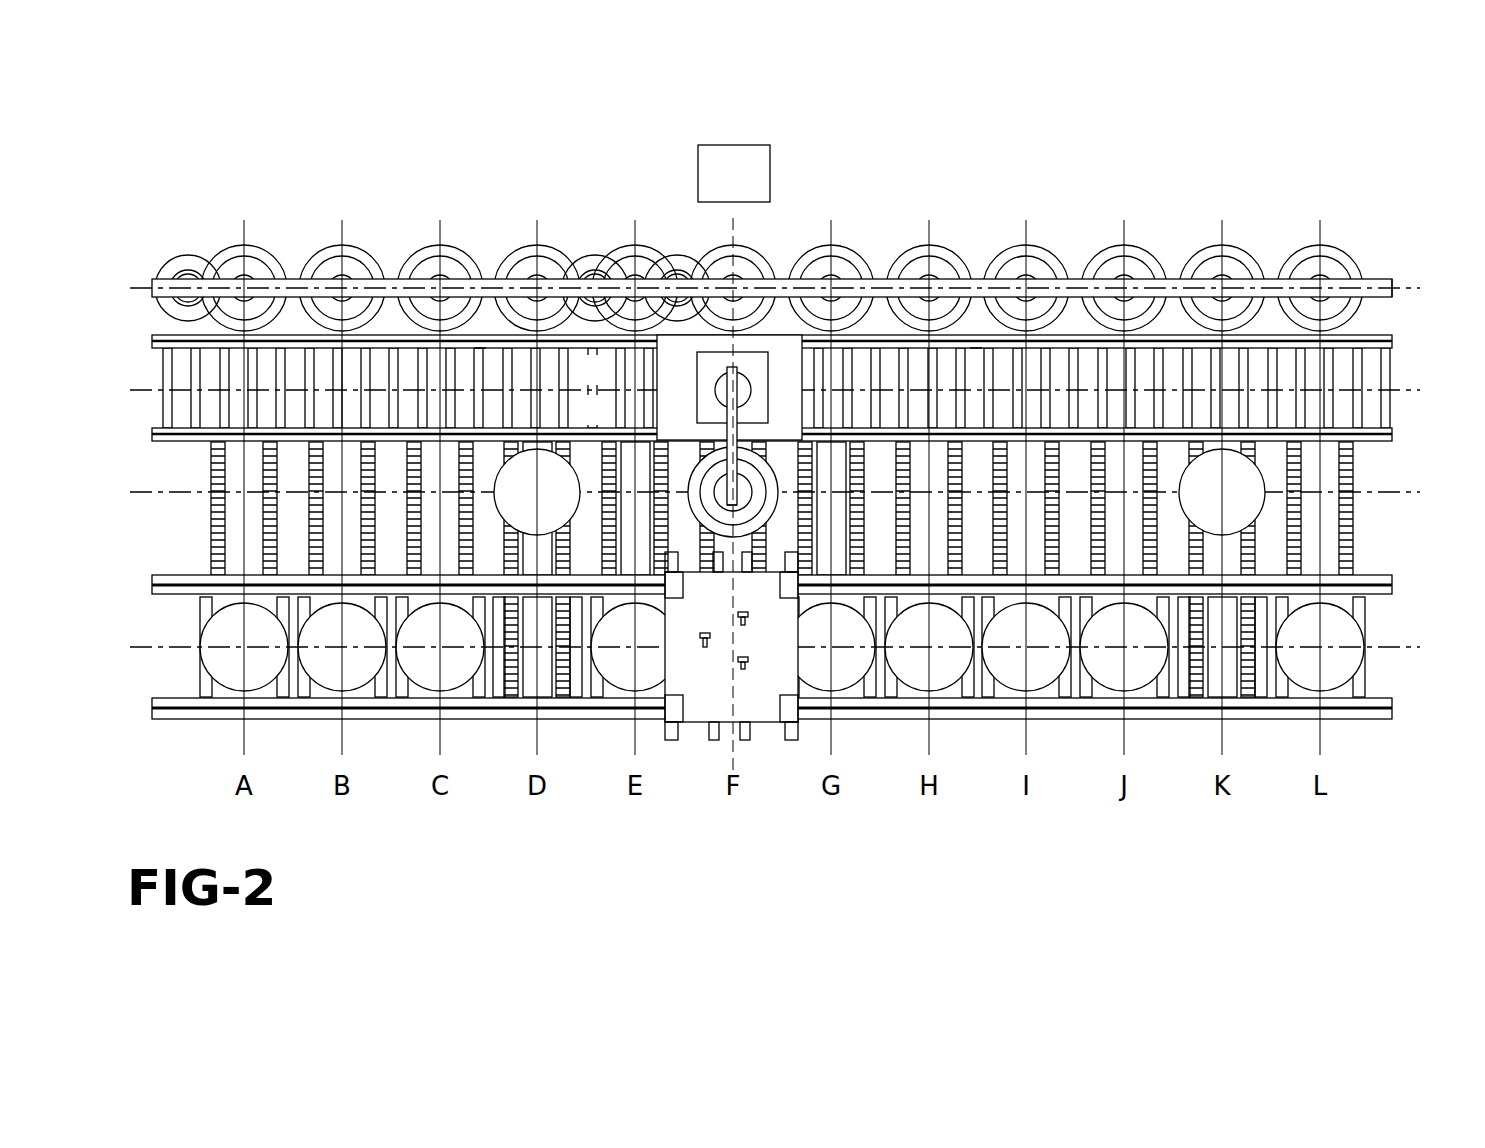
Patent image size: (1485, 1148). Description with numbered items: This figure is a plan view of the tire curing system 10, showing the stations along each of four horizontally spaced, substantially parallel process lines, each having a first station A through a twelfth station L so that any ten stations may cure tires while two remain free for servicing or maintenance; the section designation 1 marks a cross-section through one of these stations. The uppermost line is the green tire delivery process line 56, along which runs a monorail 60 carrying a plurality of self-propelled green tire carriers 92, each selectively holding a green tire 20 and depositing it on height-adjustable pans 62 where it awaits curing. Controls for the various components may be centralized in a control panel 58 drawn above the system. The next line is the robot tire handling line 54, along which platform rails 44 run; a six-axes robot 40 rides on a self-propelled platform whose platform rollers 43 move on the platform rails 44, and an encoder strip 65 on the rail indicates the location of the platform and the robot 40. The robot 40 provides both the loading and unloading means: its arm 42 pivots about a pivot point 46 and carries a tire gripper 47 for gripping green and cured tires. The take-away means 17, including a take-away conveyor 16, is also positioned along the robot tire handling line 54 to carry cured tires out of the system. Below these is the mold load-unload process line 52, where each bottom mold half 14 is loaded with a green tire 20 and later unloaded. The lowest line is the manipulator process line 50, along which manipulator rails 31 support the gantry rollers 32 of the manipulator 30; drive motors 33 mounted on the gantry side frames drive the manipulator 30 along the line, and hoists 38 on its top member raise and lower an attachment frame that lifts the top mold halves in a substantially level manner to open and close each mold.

The tire curing system 10 is at (972, 206).
The green tire 20 is at (189, 252).
The pans 62 is at (352, 252).
The green tire carriers 92 is at (597, 270).
The control panel 58 is at (719, 185).
The monorail 60 is at (1388, 280).
The green tire delivery process line 56 is at (131, 289).
The robot tire handling line 54 is at (131, 390).
The platform rails 44 is at (1393, 340).
The platform rollers 43 is at (1393, 435).
The encoder strip 65 is at (480, 350).
The take-away conveyor 16 is at (574, 382).
The take-away means 17 is at (574, 422).
The mold load-unload process line 52 is at (131, 492).
The bottom mold half 14 is at (580, 482).
The manipulator process line 50 is at (131, 647).
The gantry rollers 32 is at (1393, 584).
The manipulator rails 31 is at (1393, 706).
The robot 40 is at (665, 402).
The pivot point 46 is at (729, 380).
The arm 42 is at (727, 440).
The tire gripper 47 is at (740, 501).
The manipulator 30 is at (690, 617).
The drive motors 33 is at (665, 560).
The hoists 38 is at (738, 626).
The section line 1 is at (733, 232).